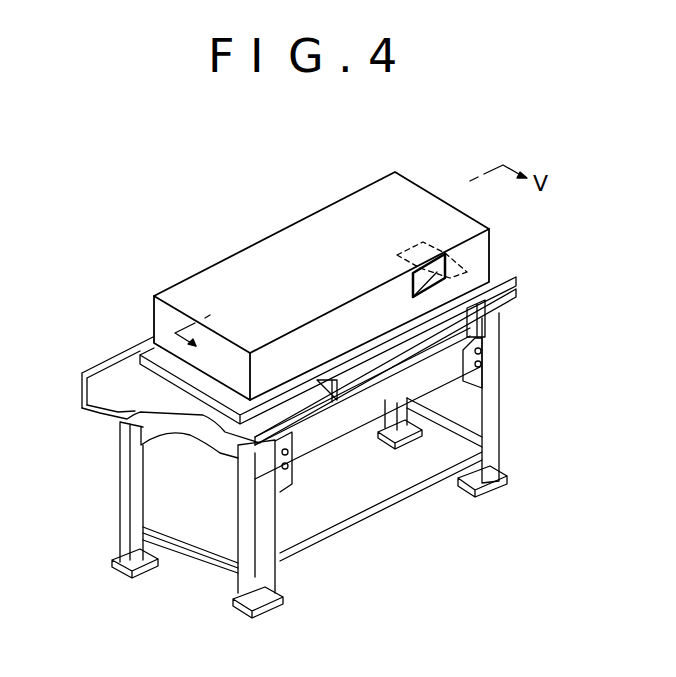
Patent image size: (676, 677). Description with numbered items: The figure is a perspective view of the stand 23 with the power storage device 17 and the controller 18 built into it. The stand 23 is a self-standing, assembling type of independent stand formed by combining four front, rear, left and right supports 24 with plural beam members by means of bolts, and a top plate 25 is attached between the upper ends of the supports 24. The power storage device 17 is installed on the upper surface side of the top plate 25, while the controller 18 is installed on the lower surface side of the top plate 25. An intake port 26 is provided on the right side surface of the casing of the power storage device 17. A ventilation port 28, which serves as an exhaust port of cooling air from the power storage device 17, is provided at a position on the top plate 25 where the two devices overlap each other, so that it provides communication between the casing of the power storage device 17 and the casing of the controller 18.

The power storage device 17 is at (207, 262).
The controller 18 is at (347, 384).
The stand 23 is at (118, 471).
The supports 24 is at (118, 522).
The top plate 25 is at (493, 268).
The intake port 26 is at (450, 280).
The ventilation port 28 is at (463, 253).